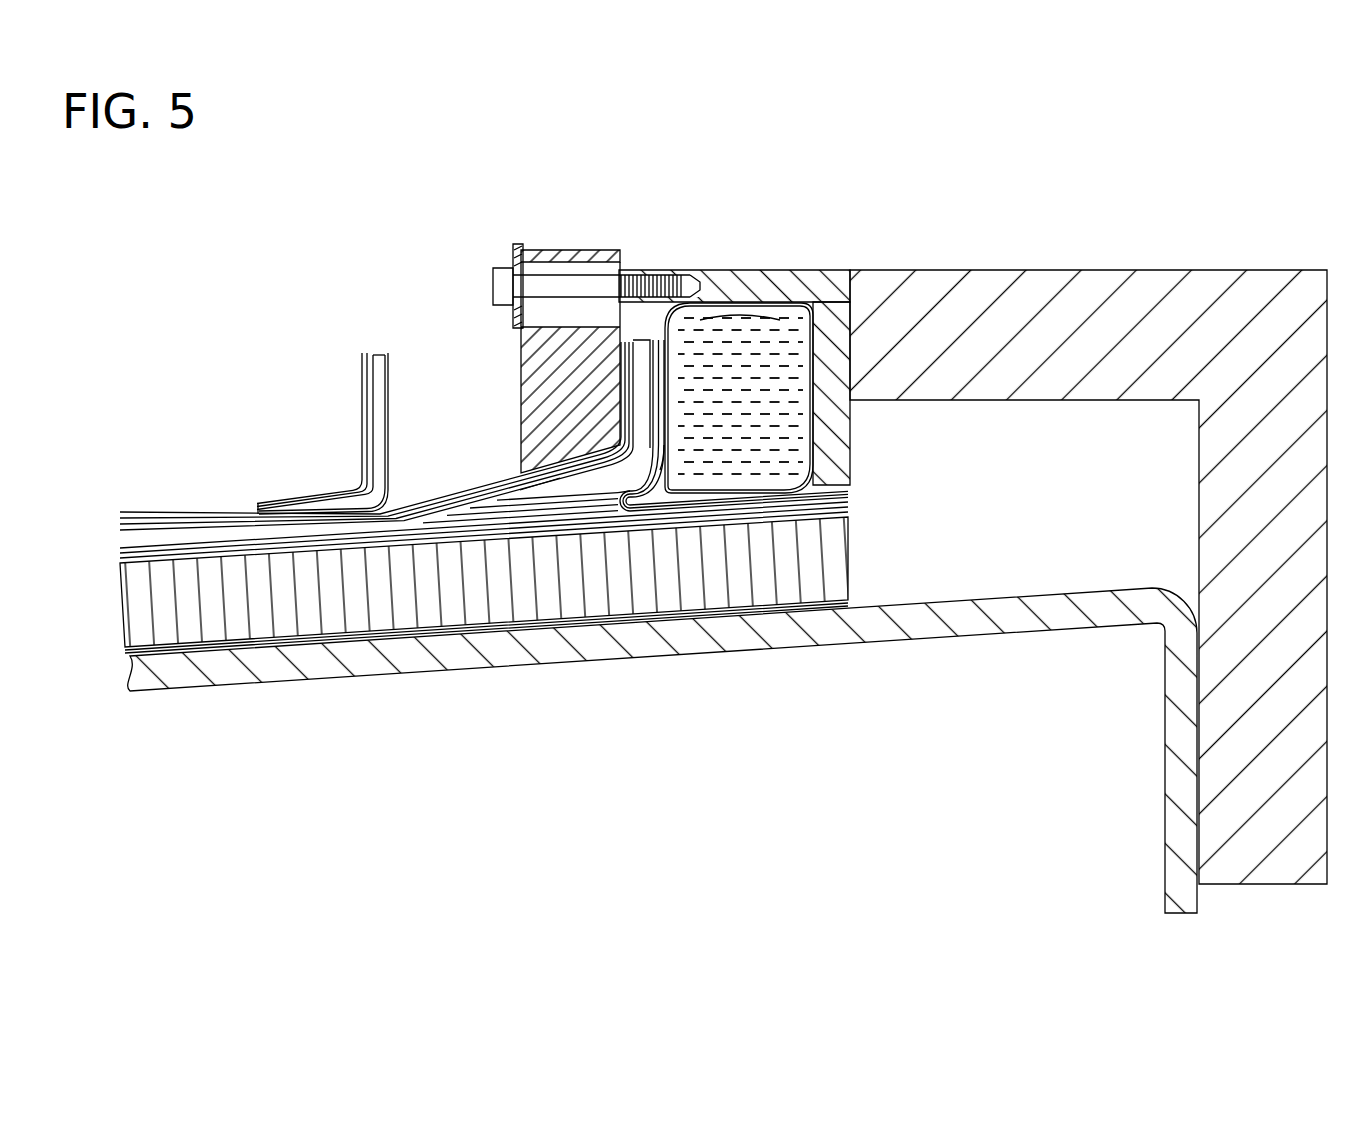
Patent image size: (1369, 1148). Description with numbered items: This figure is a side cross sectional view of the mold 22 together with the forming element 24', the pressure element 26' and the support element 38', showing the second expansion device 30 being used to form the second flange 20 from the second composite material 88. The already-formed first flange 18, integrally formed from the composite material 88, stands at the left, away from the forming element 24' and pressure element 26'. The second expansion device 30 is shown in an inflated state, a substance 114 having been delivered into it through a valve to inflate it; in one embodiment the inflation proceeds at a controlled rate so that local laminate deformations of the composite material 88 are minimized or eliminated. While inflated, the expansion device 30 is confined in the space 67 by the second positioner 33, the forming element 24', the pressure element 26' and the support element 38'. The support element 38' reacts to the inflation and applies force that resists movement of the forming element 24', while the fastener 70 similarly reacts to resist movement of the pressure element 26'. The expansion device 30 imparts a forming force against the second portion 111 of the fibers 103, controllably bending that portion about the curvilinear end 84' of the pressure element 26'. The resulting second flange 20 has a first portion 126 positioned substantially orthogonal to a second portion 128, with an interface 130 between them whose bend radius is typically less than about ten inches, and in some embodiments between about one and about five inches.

The first flange 18 is at (364, 343).
The second flange 20 is at (643, 340).
The mold 22 is at (476, 668).
The forming element 24' is at (767, 230).
The pressure element 26' is at (551, 319).
The second expansion device 30 is at (710, 322).
The second positioner 33 is at (840, 520).
The support element 38' is at (1088, 533).
The space 67 is at (820, 302).
The fastener 70 is at (493, 284).
The curvilinear end 84' is at (376, 436).
The second composite material 88 is at (493, 523).
The fibers 103 is at (848, 497).
The second portion of fibers 111 is at (658, 452).
The substance 114 is at (746, 333).
The first portion 126 is at (643, 407).
The second portion 128 is at (548, 487).
The interface 130 is at (633, 460).